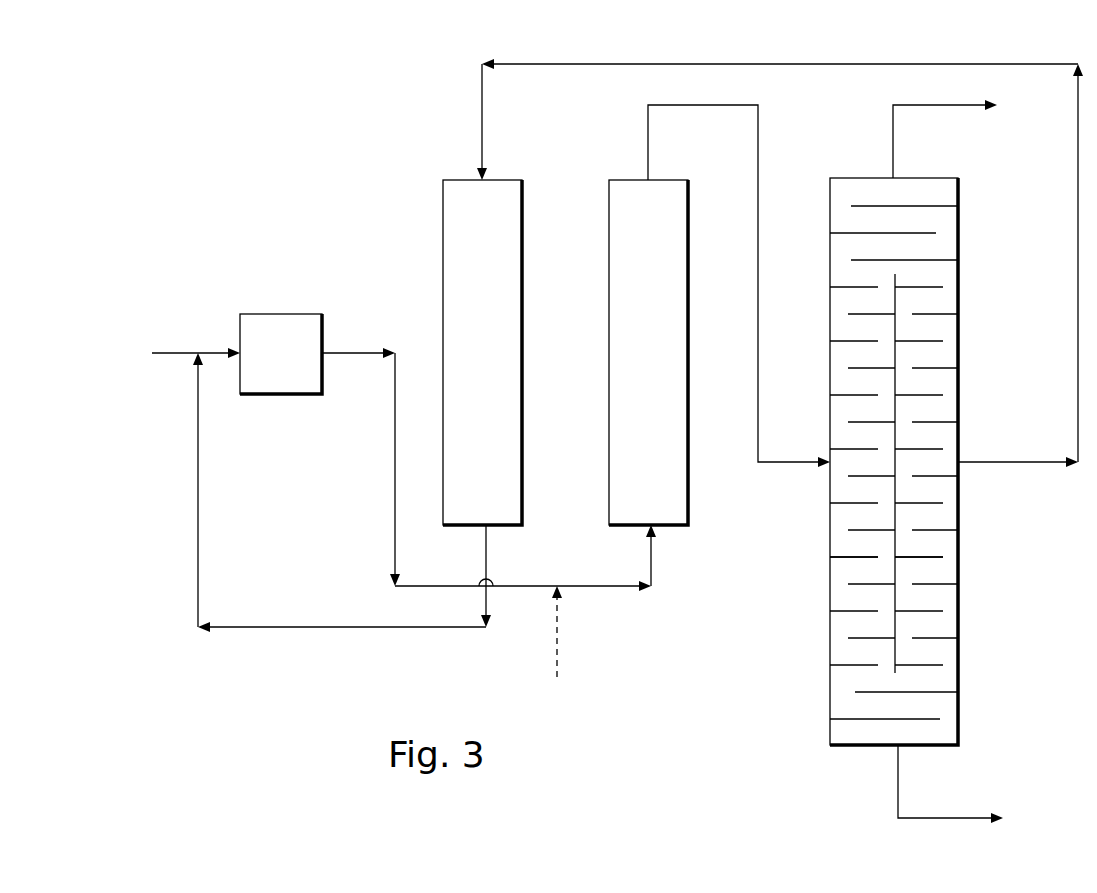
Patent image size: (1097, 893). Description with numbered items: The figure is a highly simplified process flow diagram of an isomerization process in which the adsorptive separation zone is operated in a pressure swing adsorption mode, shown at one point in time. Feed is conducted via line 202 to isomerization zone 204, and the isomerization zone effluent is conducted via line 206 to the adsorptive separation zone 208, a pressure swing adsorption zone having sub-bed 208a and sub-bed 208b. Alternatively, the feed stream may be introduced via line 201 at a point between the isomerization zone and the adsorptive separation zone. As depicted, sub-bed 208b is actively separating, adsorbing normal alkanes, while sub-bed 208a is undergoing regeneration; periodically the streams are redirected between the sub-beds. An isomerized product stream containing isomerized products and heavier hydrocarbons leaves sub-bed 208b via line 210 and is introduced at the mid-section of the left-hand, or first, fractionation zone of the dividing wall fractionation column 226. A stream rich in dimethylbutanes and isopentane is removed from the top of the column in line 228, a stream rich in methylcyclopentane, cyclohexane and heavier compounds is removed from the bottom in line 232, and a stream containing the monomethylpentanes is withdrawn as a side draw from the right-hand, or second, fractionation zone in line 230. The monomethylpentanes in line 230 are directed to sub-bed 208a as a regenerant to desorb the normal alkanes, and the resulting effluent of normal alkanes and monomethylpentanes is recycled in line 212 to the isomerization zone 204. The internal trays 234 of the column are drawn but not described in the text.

The line 201 is at (558, 645).
The line 202 is at (196, 340).
The isomerization zone 204 is at (305, 365).
The line 206 is at (349, 353).
The adsorptive separation zone 208 is at (619, 160).
The sub-bed 208a is at (516, 362).
The sub-bed 208b is at (682, 362).
The line 210 is at (758, 148).
The line 212 is at (198, 500).
The dividing wall fractionation column 226 is at (940, 220).
The line 228 is at (922, 105).
The line 230 is at (997, 460).
The line 232 is at (916, 816).
The column trays 234 is at (898, 577).